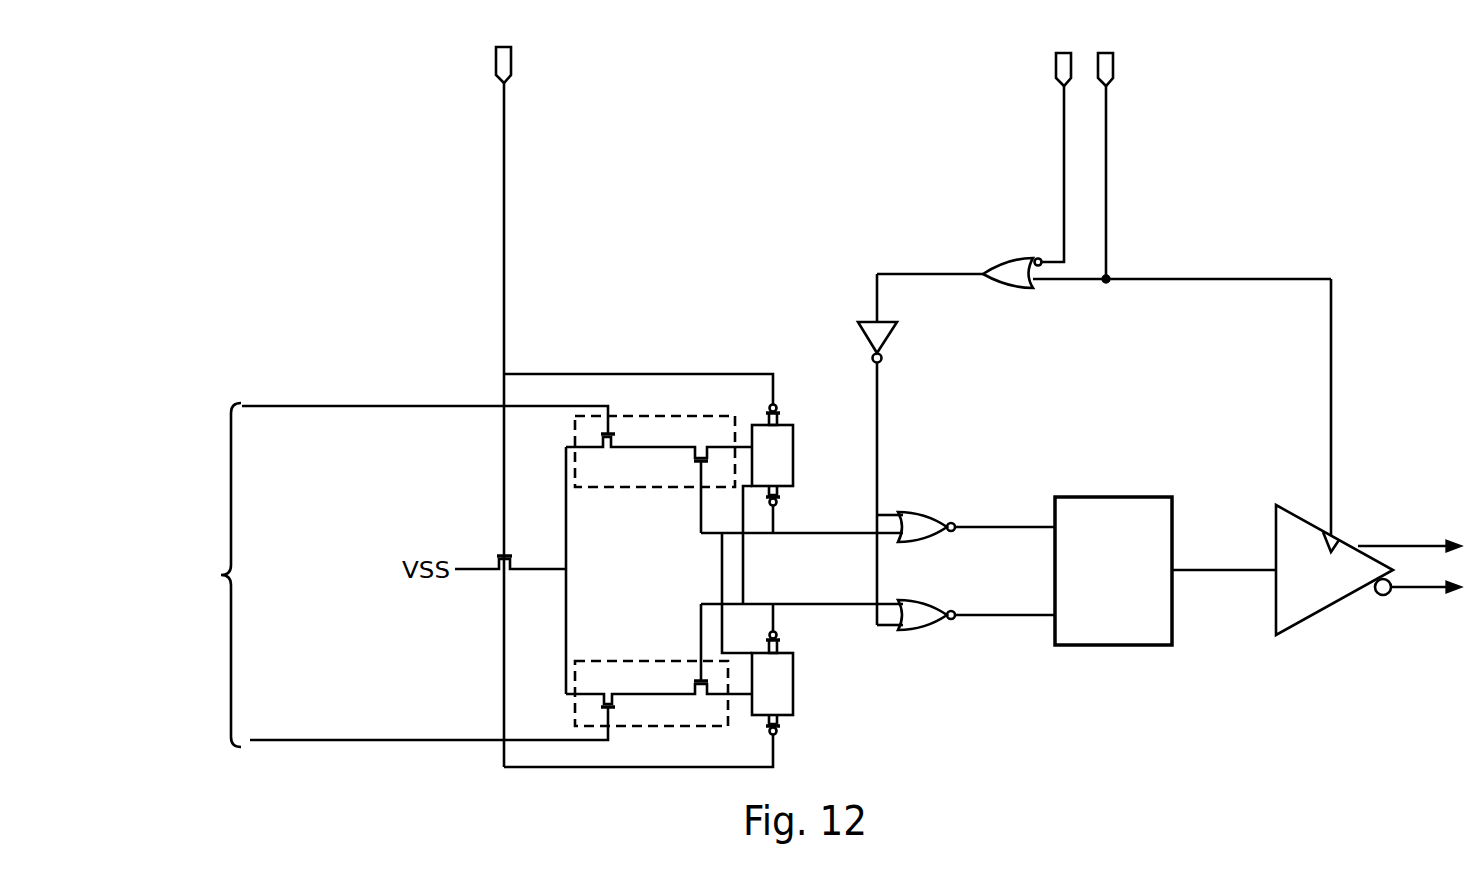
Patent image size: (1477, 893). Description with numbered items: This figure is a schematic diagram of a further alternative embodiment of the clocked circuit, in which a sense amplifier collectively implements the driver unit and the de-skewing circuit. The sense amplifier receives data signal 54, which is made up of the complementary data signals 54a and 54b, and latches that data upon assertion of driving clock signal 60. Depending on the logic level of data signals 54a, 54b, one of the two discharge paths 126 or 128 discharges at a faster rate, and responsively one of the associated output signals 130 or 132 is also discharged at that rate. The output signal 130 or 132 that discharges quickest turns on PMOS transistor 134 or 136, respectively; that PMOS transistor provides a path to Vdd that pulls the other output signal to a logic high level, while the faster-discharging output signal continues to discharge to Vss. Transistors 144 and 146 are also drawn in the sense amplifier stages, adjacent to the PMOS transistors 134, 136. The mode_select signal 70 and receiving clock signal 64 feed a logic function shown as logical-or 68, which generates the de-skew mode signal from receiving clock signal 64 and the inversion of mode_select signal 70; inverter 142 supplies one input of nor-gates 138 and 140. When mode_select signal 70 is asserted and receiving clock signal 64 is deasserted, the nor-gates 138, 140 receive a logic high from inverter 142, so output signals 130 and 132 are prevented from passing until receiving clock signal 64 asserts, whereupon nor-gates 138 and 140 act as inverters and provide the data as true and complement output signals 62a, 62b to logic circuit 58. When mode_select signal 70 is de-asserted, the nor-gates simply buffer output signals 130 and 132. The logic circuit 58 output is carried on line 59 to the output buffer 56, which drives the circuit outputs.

The data signal 54 is at (195, 575).
The data signal 54a is at (307, 406).
The data signal 54b is at (323, 740).
The amplifier / receiver 56 is at (1336, 584).
The logic circuit 58 is at (1099, 623).
The logic circuit output line 59 is at (1230, 571).
The driving clock signal 60 is at (505, 187).
The true output signal 62a is at (1019, 525).
The complement output signal 62b is at (1013, 613).
The receiving clock signal 64 is at (1108, 218).
The logical-or 68 is at (1013, 289).
The mode_select signal 70 is at (1063, 206).
The discharge path 126 is at (612, 490).
The discharge path 128 is at (608, 661).
The output signal 130 is at (800, 533).
The output signal 132 is at (798, 604).
The PMOS transistor 134 is at (783, 641).
The PMOS transistor 136 is at (783, 497).
The nor-gate 138 is at (920, 512).
The nor-gate 140 is at (920, 600).
The inverter 142 is at (887, 340).
The transistor 144 is at (779, 418).
The transistor 146 is at (785, 721).